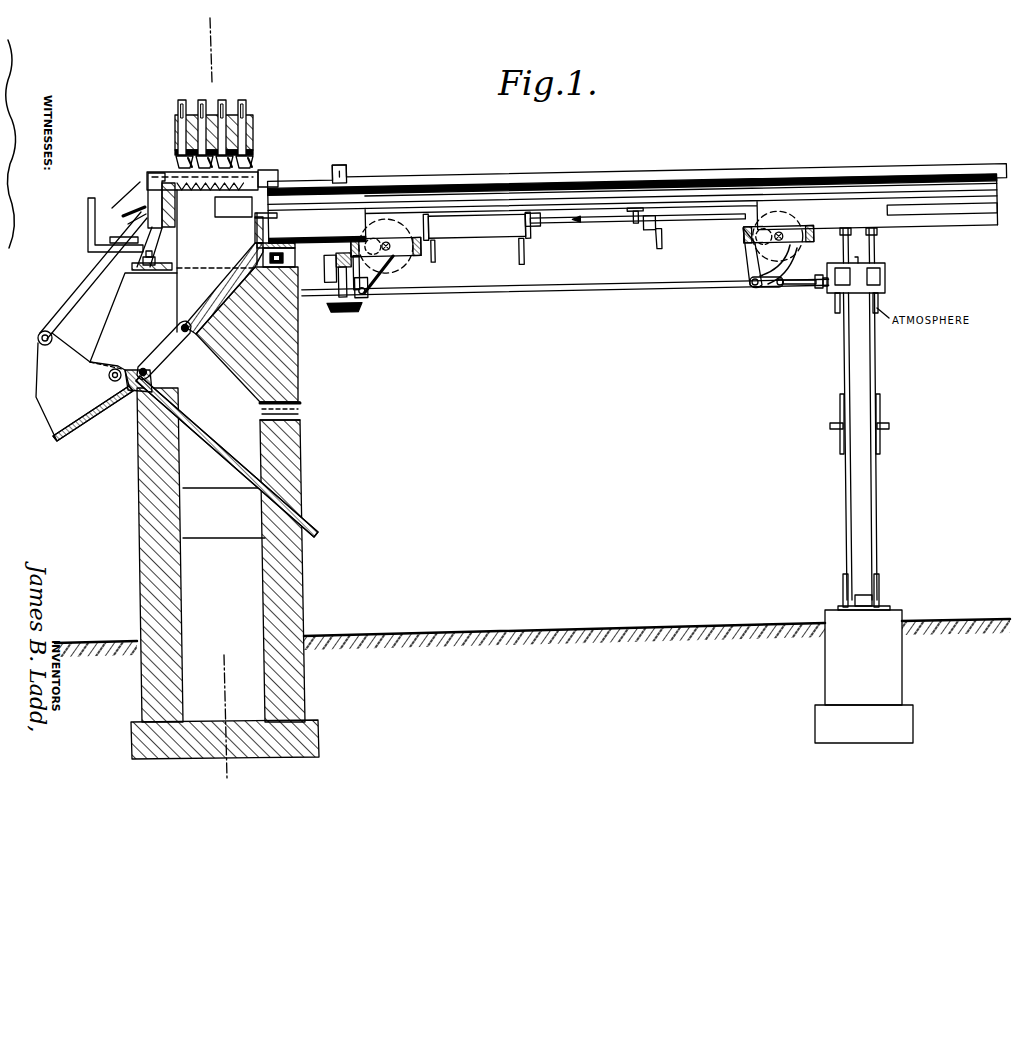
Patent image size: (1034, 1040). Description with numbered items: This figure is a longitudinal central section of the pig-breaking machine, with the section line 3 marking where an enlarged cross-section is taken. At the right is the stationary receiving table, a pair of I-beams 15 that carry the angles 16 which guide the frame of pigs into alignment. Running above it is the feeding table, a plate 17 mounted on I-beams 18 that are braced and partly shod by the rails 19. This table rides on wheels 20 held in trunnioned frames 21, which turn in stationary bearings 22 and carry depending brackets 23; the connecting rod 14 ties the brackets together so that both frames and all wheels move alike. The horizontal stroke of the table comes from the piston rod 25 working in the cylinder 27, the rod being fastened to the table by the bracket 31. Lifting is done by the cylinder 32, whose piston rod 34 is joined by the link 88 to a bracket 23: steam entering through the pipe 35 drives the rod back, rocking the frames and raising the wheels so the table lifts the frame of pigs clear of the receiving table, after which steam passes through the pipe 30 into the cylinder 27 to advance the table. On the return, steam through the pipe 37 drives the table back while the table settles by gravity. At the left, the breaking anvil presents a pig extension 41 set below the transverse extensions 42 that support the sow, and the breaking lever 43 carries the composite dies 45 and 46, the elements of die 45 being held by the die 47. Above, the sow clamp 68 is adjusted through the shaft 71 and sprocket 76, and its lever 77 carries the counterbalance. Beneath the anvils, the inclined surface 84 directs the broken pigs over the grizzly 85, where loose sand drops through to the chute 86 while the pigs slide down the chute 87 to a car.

The section line 3 is at (227, 399).
The connecting rod 14 is at (550, 288).
The I-beams 15 is at (940, 220).
The angles 16 is at (571, 177).
The plate 17 is at (675, 183).
The I-beams 18 is at (708, 198).
The rails 19 is at (882, 208).
The wheels 20 is at (362, 237).
The trunnioned frames 21 is at (432, 256).
The stationary bearings 22 is at (743, 252).
The brackets 23 is at (378, 283).
The piston rod 25 is at (593, 222).
The cylinder 27 is at (477, 232).
The pipe 30 is at (525, 260).
The bracket 31 is at (643, 230).
The cylinder 32 is at (887, 285).
The piston rod 34 is at (801, 285).
The pipe 35 is at (833, 309).
The pipe 37 is at (420, 262).
The extension 41 is at (213, 252).
The transverse extensions 42 is at (238, 199).
The breaking lever 43 is at (255, 134).
The composite die 45 is at (186, 169).
The composite die 46 is at (278, 178).
The die 47 is at (226, 100).
The sow clamp 68 is at (345, 166).
The shaft 71 is at (368, 297).
The sprocket 76 is at (342, 307).
The lever 77 is at (340, 278).
The inclined surface 84 is at (210, 301).
The grizzly 85 is at (170, 339).
The chute 86 is at (213, 430).
The chute 87 is at (106, 311).
The link 88 is at (765, 287).